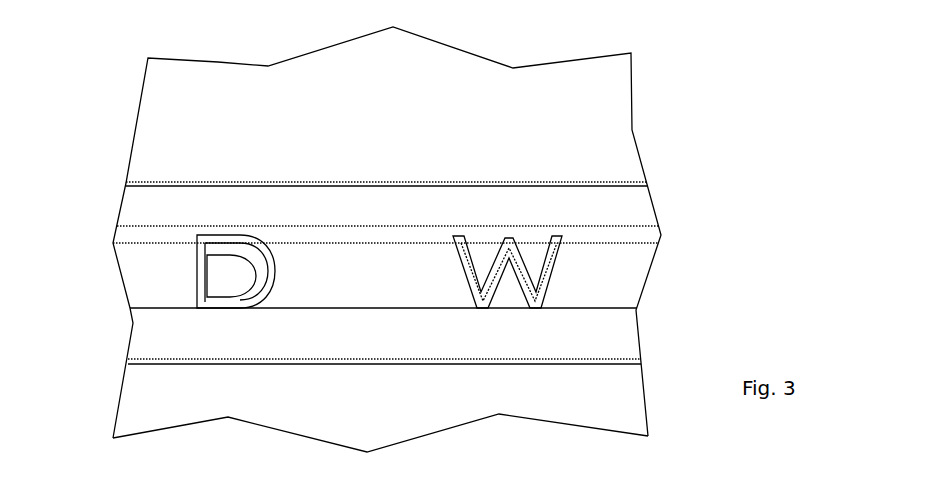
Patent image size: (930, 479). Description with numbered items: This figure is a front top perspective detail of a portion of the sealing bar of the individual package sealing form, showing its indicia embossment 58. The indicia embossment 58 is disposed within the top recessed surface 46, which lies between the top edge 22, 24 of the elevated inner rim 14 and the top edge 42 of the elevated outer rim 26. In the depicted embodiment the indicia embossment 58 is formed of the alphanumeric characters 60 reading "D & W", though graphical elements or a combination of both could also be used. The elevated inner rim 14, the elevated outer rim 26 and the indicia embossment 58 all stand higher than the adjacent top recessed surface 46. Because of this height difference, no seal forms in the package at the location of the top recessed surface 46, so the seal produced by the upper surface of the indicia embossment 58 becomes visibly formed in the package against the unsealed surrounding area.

The elevated inner rim 14 is at (142, 322).
The top edge of the elevated inner rim 22 is at (623, 340).
The top edge of the elevated inner rim 24 is at (620, 398).
The elevated outer rim 26 is at (146, 206).
The top edge of the elevated outer rim 42 is at (643, 210).
The top recessed surface 46 is at (638, 260).
The indicia embossment 58 is at (148, 292).
The alphanumeric characters 60 is at (263, 243).